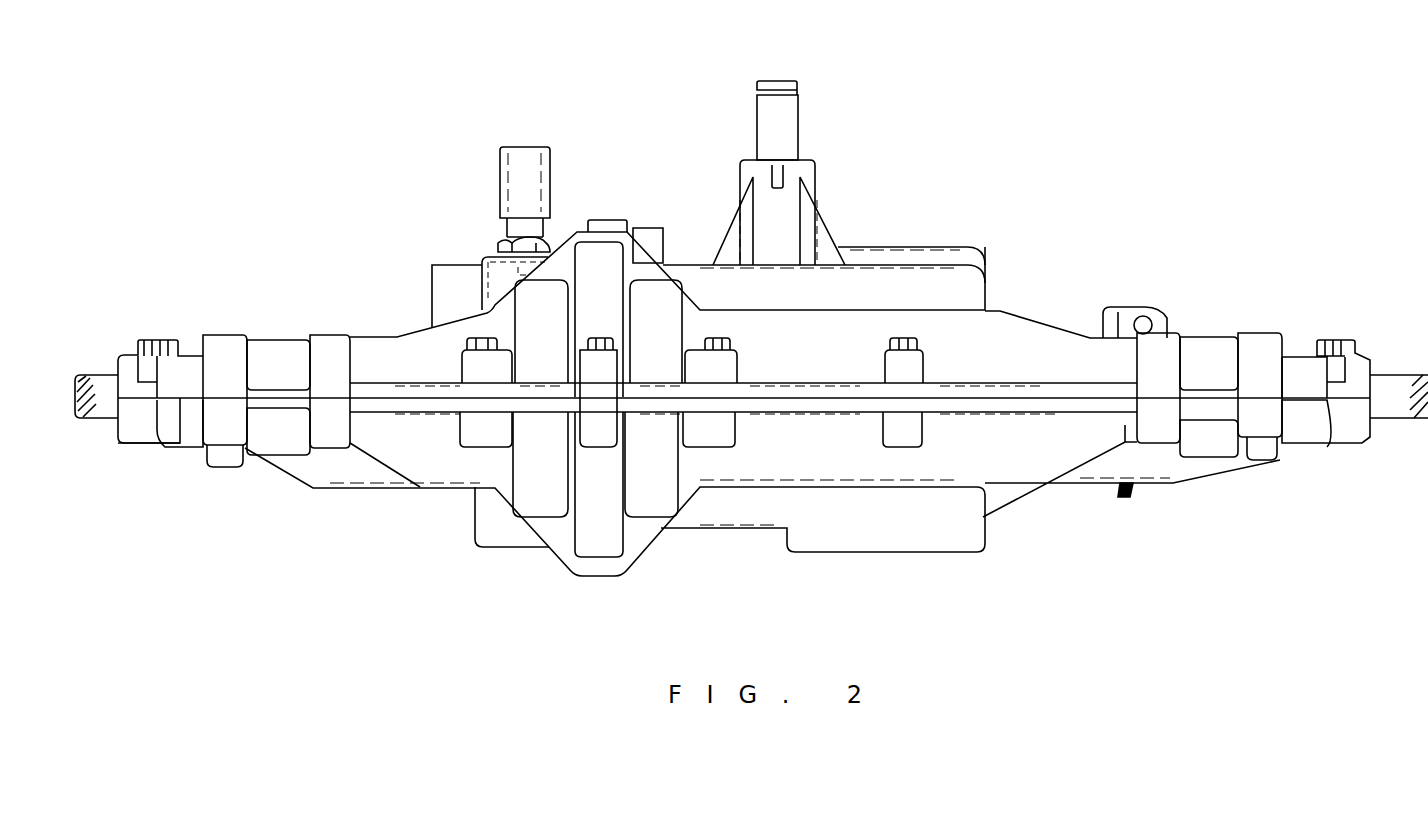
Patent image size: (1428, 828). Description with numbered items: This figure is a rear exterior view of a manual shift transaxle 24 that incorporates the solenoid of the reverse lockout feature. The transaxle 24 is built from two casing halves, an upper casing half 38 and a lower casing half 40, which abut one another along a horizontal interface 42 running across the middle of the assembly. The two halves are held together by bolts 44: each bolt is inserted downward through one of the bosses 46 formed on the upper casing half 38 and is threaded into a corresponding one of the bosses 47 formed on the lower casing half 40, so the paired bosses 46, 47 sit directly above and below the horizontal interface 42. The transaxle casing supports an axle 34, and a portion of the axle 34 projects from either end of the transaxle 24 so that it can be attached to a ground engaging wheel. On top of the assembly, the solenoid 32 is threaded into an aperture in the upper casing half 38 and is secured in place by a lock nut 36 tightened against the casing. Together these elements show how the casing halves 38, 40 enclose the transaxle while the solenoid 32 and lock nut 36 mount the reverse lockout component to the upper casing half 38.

The transaxle 24 is at (1137, 187).
The solenoid 32 is at (525, 157).
The axle 34 is at (98, 415).
The lock nut 36 is at (503, 242).
The upper casing half 38 is at (1028, 330).
The lower casing half 40 is at (1025, 458).
The horizontal interface 42 is at (803, 390).
The bolts 44 is at (483, 338).
The bosses 46 is at (467, 367).
The bosses 47 is at (485, 435).